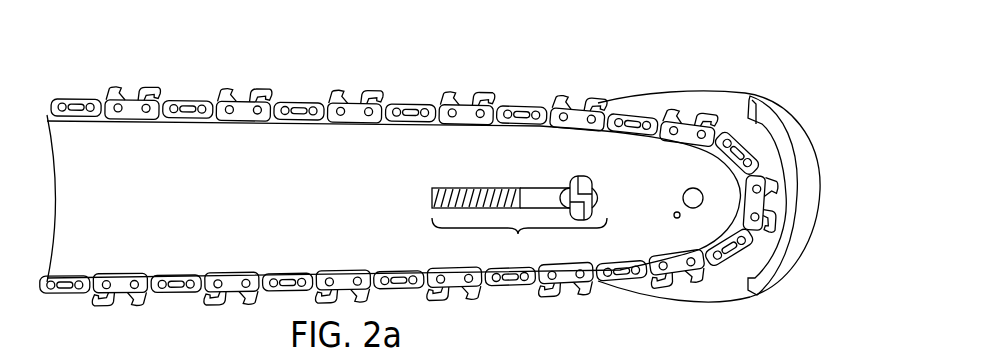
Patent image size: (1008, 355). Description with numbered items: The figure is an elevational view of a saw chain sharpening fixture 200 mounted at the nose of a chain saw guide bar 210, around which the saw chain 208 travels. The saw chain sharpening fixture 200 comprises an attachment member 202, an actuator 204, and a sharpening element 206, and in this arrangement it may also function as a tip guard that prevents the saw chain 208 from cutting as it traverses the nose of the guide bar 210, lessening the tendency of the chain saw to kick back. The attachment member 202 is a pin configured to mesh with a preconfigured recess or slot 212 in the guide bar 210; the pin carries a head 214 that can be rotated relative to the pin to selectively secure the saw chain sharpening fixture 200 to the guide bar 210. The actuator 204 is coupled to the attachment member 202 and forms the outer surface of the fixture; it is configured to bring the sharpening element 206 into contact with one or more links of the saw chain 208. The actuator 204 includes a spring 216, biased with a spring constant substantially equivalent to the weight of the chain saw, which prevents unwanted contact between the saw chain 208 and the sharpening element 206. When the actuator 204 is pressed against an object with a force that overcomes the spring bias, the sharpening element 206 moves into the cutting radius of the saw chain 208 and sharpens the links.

The saw chain sharpening fixture 200 is at (746, 199).
The attachment member 202 is at (545, 179).
The actuator 204 is at (820, 186).
The sharpening element 206 is at (757, 273).
The saw chain 208 is at (468, 83).
The guide bar 210 is at (362, 153).
The slot 212 is at (545, 198).
The head 214 is at (587, 200).
The spring 216 is at (485, 192).